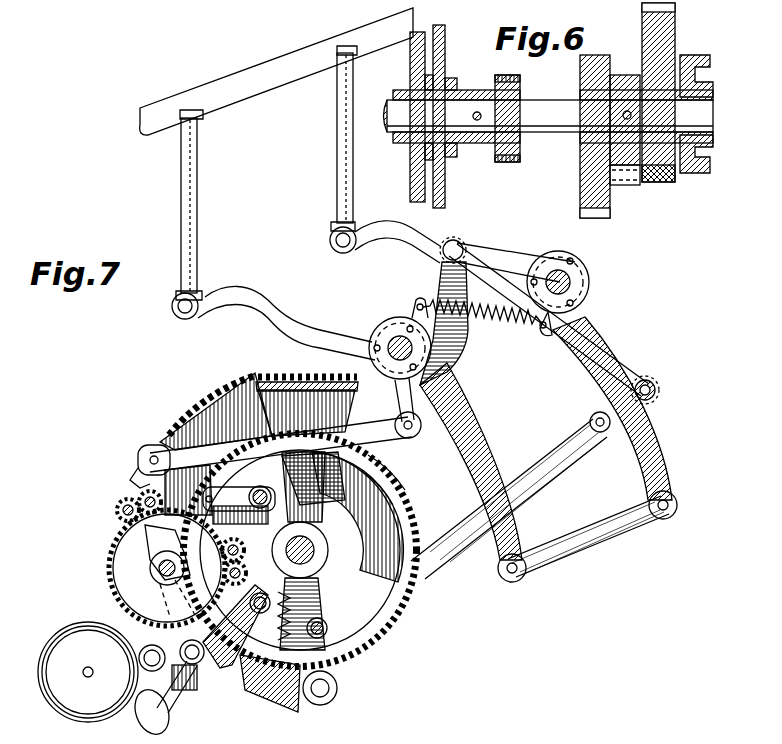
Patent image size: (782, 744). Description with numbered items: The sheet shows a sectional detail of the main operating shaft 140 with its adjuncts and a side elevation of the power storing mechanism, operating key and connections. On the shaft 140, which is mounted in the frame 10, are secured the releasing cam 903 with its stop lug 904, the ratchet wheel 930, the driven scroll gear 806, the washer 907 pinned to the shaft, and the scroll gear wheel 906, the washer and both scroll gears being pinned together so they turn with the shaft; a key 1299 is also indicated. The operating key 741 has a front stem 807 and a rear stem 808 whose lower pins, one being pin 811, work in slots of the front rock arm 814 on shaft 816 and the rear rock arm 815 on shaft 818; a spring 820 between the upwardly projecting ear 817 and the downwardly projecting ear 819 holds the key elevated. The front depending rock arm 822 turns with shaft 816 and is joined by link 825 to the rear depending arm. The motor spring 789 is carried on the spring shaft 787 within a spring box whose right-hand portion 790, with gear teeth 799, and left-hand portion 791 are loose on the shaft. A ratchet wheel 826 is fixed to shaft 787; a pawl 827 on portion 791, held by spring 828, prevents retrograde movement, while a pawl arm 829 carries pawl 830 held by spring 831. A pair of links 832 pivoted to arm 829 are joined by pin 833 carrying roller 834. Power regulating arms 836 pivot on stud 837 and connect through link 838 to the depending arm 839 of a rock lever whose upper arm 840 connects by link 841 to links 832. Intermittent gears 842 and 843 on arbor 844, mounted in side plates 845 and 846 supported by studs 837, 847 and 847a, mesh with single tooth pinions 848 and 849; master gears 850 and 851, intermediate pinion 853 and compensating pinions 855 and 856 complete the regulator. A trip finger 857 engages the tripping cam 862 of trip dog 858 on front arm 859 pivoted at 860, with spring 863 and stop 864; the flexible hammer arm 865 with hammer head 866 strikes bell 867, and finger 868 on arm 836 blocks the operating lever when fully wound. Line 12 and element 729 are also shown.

In FIG. 6, the frame 10 is at (410, 60).
In FIG. 6, the main operating shaft 140 is at (562, 122).
In FIG. 6, the releasing cam 903 is at (445, 64).
In FIG. 6, the stop lug or shoulder 904 is at (433, 182).
In FIG. 6, the ratchet wheel 930 is at (512, 75).
In FIG. 6, the scroll gear 806 is at (583, 190).
In FIG. 6, the washer 907 is at (622, 75).
In FIG. 6, the scroll gear wheel 906 is at (672, 38).
In FIG. 6, the key 1299 is at (625, 188).
In FIG. 7, the operating key 741 is at (266, 74).
In FIG. 7, the front stem 807 is at (190, 160).
In FIG. 7, the rear stem 808 is at (340, 152).
In FIG. 7, the lateral pin 811 is at (330, 240).
In FIG. 7, the front rock arm 814 is at (318, 330).
In FIG. 7, the rear rock arm 815 is at (416, 238).
In FIG. 7, the shaft 816 is at (395, 345).
In FIG. 7, the upwardly projecting ear 817 is at (416, 305).
In FIG. 7, the shaft 818 is at (568, 280).
In FIG. 7, the downwardly projecting ear 819 is at (563, 330).
In FIG. 7, the spring 820 is at (465, 322).
In FIG. 7, the front depending rock arm 822 is at (483, 425).
In FIG. 7, the link 825 is at (596, 540).
In FIG. 7, the ratchet wheel 826 is at (395, 592).
In FIG. 7, the pawl 827 is at (392, 468).
In FIG. 7, the spring 828 is at (605, 350).
In FIG. 7, the pawl arm 829 is at (337, 675).
In FIG. 7, the pawl 830 is at (298, 700).
In FIG. 7, the spring 831 is at (272, 620).
In FIG. 7, the links 832 is at (522, 460).
In FIG. 7, the pin 833 is at (655, 385).
In FIG. 7, the roller 834 is at (659, 392).
In FIG. 7, the power regulating arms 836 is at (138, 463).
In FIG. 7, the regulator stud 837 is at (150, 568).
In FIG. 7, the link 838 is at (281, 444).
In FIG. 7, the depending arm 839 is at (412, 436).
In FIG. 7, the upper arm 840 is at (442, 282).
In FIG. 7, the link 841 is at (560, 372).
In FIG. 7, the intermittent gear wheel 842 is at (247, 547).
In FIG. 7, the intermittent gear wheel 843 is at (178, 550).
In FIG. 7, the arbor 844 is at (248, 565).
In FIG. 7, the side plate 845 is at (245, 499).
In FIG. 7, the side plate 846 is at (96, 597).
In FIG. 7, the stud 847 is at (266, 486).
In FIG. 7, the stud 847a is at (300, 575).
In FIG. 7, the single tooth pinion 848 is at (328, 550).
In FIG. 7, the single tooth pinion 849 is at (300, 530).
In FIG. 7, the master gear wheel 850 is at (138, 591).
In FIG. 7, the master gear wheel 851 is at (112, 550).
In FIG. 7, the intermediate pinion 853 is at (211, 562).
In FIG. 7, the planetary compensating gear pinion 855 is at (155, 509).
In FIG. 7, the planetary compensating gear pinion 856 is at (117, 511).
In FIG. 7, the trip finger 857 is at (208, 586).
In FIG. 7, the trip dog 858 is at (167, 681).
In FIG. 7, the front arm 859 is at (145, 660).
In FIG. 7, the pivot pin 860 is at (205, 652).
In FIG. 7, the tripping cam 862 is at (176, 602).
In FIG. 7, the spring 863 is at (148, 606).
In FIG. 7, the stop 864 is at (140, 655).
In FIG. 7, the flexible hammer arm 865 is at (176, 702).
In FIG. 7, the hammer head 866 is at (148, 722).
In FIG. 7, the bell 867 is at (88, 672).
In FIG. 7, the finger 868 is at (150, 446).
In FIG. 7, the sector 729 is at (248, 421).
In FIG. 7, the motor spring shaft 787 is at (318, 556).
In FIG. 7, the motor spring 789 is at (322, 478).
In FIG. 7, the right-hand portion of spring box 790 is at (210, 398).
In FIG. 7, the left-hand portion of spring box 791 is at (408, 484).
In FIG. 7, the gear teeth 799 is at (238, 386).
In FIG. 7, the axis line 12 is at (145, 490).